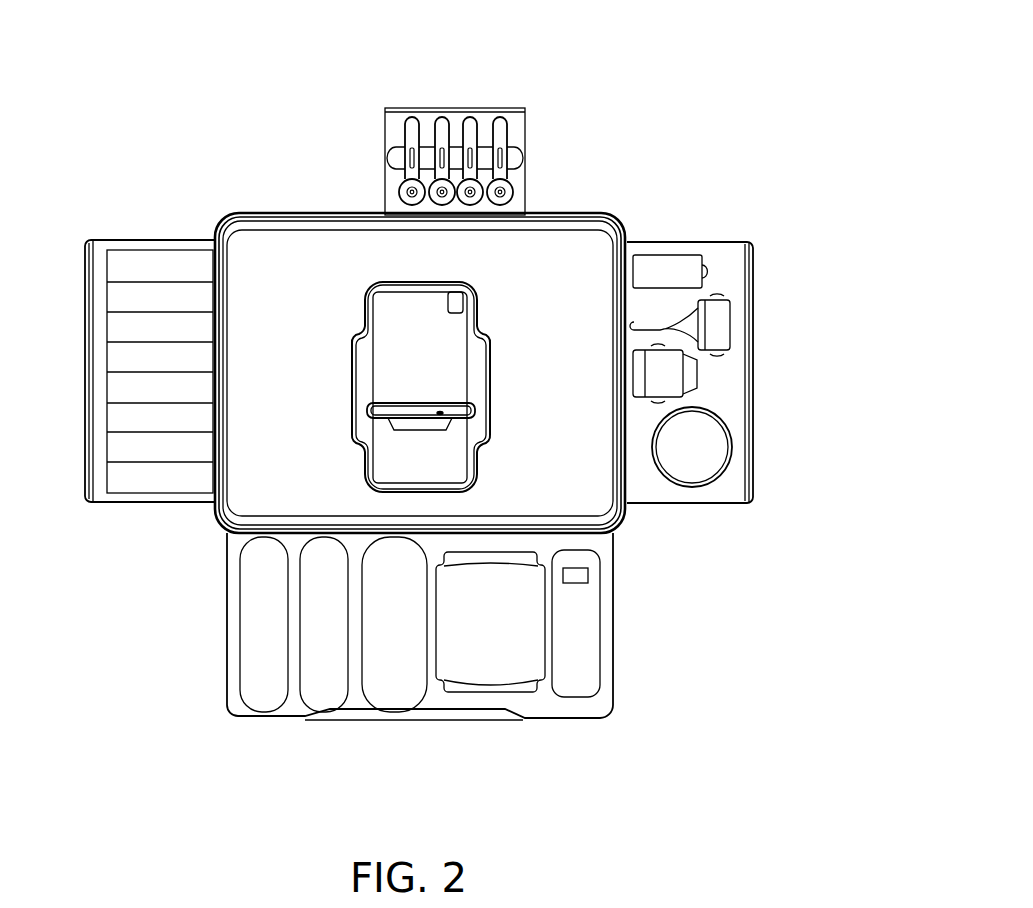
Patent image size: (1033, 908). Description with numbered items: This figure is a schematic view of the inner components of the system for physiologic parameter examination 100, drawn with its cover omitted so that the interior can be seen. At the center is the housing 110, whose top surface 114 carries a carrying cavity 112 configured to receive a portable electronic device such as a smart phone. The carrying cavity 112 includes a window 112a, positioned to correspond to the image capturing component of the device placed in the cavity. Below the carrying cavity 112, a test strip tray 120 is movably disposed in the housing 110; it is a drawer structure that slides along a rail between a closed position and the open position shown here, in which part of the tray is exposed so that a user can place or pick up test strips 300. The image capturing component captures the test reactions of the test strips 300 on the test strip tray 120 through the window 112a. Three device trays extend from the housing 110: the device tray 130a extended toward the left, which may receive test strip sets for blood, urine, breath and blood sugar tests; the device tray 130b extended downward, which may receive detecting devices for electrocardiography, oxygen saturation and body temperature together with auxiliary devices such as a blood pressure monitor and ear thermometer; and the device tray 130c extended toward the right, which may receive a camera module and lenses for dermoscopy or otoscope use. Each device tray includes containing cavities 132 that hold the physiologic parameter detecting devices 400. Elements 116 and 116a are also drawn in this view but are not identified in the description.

The system for physiologic parameter examination 100 is at (625, 85).
The housing 110 is at (222, 518).
The carrying cavity 112 is at (450, 368).
The window 112a is at (460, 302).
The top surface 114 is at (320, 250).
The support shelf 116 is at (368, 410).
The protrusion on support shelf 116a is at (440, 413).
The test strip tray 120 is at (498, 110).
The device tray 130a is at (97, 246).
The device tray 130b is at (585, 720).
The device tray 130c is at (735, 250).
The containing cavity 132 is at (535, 692).
The test strip 300 is at (410, 122).
The physiologic parameter detecting device 400 is at (469, 670).